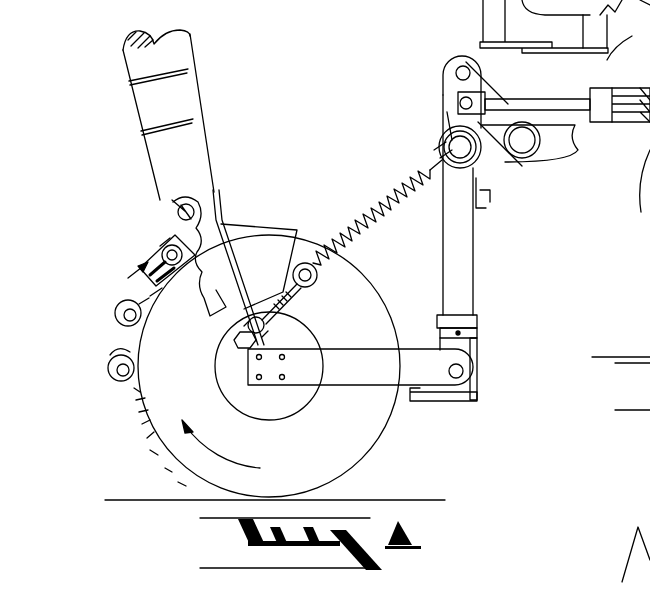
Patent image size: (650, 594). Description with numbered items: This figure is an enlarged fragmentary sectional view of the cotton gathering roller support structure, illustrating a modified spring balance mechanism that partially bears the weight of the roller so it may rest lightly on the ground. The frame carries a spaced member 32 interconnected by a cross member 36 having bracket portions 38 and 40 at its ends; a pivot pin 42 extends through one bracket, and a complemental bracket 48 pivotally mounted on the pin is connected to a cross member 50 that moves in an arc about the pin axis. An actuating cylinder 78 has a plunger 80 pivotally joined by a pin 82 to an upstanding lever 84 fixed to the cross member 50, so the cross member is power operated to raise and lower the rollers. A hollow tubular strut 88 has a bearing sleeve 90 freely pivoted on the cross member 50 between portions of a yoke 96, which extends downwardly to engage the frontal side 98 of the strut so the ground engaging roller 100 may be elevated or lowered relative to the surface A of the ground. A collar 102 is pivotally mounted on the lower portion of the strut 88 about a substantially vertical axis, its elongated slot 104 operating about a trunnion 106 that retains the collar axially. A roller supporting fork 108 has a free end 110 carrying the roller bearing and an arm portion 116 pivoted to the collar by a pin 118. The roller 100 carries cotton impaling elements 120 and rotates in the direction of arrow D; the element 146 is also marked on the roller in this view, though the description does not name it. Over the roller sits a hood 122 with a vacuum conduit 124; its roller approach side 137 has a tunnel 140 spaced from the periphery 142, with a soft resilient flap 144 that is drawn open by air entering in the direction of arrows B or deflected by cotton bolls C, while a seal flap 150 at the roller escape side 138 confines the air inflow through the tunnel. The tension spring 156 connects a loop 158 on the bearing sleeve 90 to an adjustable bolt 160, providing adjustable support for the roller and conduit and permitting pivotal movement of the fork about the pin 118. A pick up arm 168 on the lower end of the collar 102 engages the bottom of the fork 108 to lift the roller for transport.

The surface of the ground A is at (405, 500).
The arrows B is at (128, 296).
The cotton bolls C is at (124, 336).
The arrow D is at (250, 466).
The spaced member 32 is at (582, 156).
The cross member 36 is at (522, 162).
The bracket portion 38 is at (441, 78).
The bracket portion 40 is at (625, 30).
The pivot pin 42 is at (462, 66).
The complemental bracket 48 is at (516, 50).
The cross member 50 is at (438, 144).
The actuating cylinder 78 is at (588, 102).
The plunger 80 is at (490, 80).
The pin 82 is at (456, 102).
The upstanding lever 84 is at (450, 120).
The roller supporting strut 88 is at (458, 232).
The bearing sleeve 90 is at (456, 170).
The yoke 96 is at (488, 210).
The frontal side 98 is at (470, 186).
The ground engaging roller 100 is at (160, 420).
The collar 102 is at (440, 333).
The elongated slot 104 is at (432, 314).
The trunnion 106 is at (478, 349).
The roller supporting fork 108 is at (370, 370).
The free end 110 is at (276, 370).
The arm portion 116 is at (470, 398).
The pin 118 is at (456, 380).
The cotton impaling elements 120 is at (258, 335).
The hood 122 is at (225, 232).
The vacuum conduit 124 is at (155, 150).
The roller approach side 137 is at (146, 270).
The roller escape side 138 is at (293, 238).
The tunnel 140 is at (146, 262).
The periphery 142 is at (149, 307).
The soft resilient flap 144 is at (192, 284).
The ratchet teeth 146 is at (140, 416).
The seal flap 150 is at (264, 262).
The tension spring 156 is at (374, 206).
The loop 158 is at (438, 150).
The adjustable bolt 160 is at (298, 286).
The pick up arm 168 is at (416, 400).